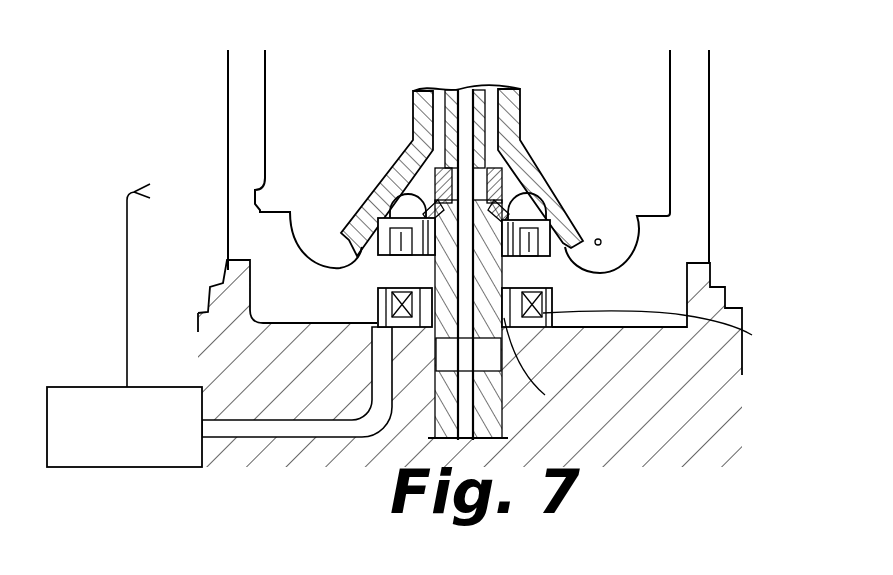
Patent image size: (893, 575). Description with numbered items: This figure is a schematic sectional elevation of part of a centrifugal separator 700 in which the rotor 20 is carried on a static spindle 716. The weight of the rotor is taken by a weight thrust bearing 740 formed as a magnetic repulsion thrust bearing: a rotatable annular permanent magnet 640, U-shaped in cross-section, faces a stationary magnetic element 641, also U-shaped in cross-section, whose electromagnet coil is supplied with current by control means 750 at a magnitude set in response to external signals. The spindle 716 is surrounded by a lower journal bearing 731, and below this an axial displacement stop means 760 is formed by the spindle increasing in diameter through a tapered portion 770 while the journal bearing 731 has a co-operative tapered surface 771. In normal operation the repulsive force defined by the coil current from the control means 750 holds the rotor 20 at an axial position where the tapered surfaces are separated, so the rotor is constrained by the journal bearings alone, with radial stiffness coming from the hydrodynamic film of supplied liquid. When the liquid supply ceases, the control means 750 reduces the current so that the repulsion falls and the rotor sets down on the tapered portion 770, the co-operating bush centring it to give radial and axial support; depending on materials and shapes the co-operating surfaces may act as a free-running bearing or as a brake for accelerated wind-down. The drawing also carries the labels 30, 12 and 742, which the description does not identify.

The centrifugal separator 700 is at (203, 108).
The rotor 20 is at (676, 148).
The rotor hub 30 is at (512, 112).
The static spindle 716 is at (482, 95).
The shaft 12 is at (504, 339).
The co-operative tapered surface 771 is at (433, 172).
The lower journal bearing 731 is at (490, 180).
The annular permanent magnet 640 is at (393, 203).
The axial displacement stop means 760 is at (487, 241).
The tapered portion 770 is at (392, 306).
The gap 742 is at (370, 284).
The weight thrust bearing 740 is at (578, 297).
The stationary magnetic element 641 is at (655, 353).
The control means 750 is at (88, 388).